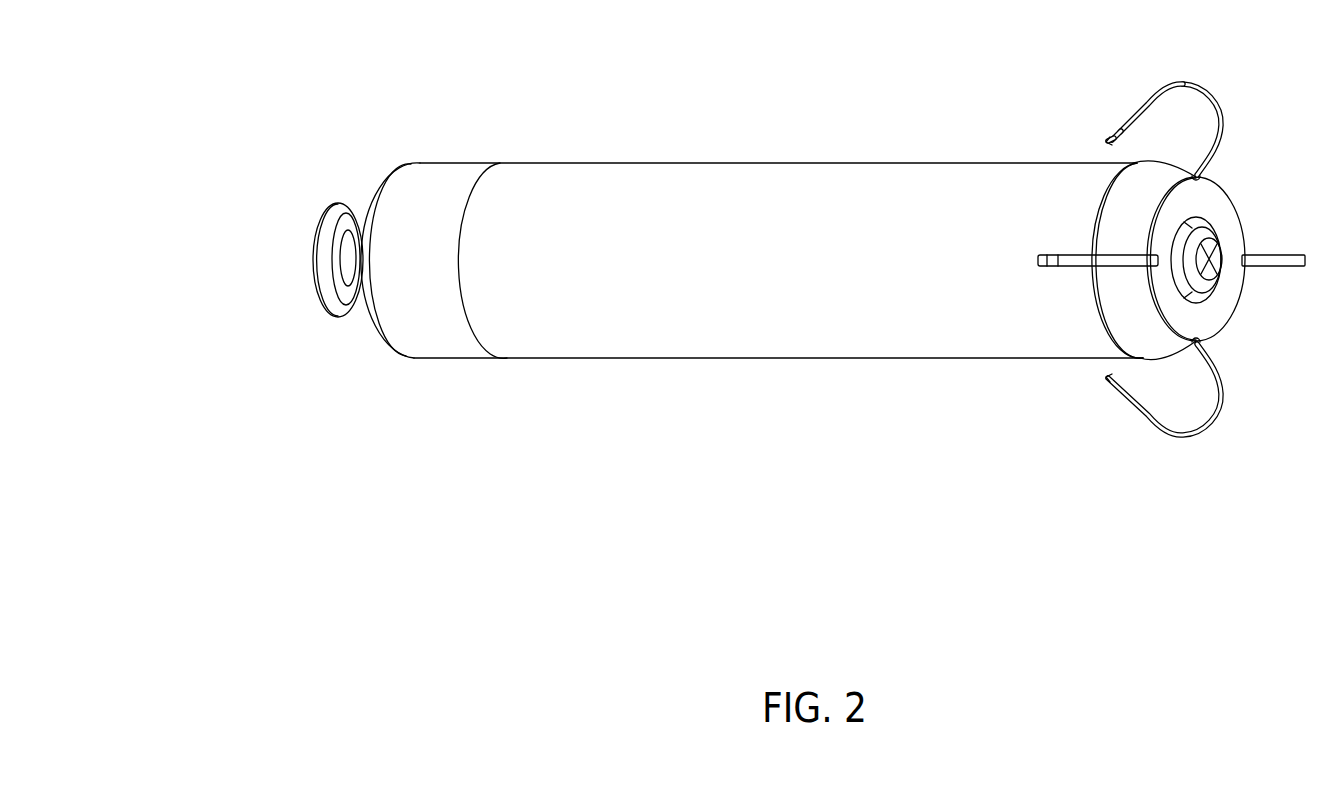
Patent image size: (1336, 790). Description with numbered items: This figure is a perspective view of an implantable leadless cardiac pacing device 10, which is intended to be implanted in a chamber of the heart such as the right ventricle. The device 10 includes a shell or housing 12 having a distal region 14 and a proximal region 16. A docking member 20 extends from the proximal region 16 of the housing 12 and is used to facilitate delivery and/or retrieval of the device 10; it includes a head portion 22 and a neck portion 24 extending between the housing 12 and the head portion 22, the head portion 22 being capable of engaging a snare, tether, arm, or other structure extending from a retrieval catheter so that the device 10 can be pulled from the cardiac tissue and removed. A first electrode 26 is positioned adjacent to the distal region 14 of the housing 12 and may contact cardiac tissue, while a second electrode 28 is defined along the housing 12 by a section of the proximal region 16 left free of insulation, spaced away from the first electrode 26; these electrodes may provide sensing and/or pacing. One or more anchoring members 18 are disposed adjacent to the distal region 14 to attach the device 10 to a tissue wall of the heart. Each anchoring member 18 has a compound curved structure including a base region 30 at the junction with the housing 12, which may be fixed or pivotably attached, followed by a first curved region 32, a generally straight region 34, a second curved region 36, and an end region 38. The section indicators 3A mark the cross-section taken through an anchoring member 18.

The implantable leadless cardiac pacing device 10 is at (632, 132).
The housing 12 is at (857, 163).
The distal region 14 is at (1082, 328).
The proximal region 16 is at (545, 330).
The anchoring member 18 is at (1200, 80).
The docking member 20 is at (314, 292).
The head portion 22 is at (342, 212).
The neck portion 24 is at (347, 265).
The first electrode 26 is at (1217, 277).
The second electrode 28 is at (438, 330).
The base region 30 is at (1199, 177).
The first curved region 32 is at (1223, 115).
The generally straight region 34 is at (1145, 110).
The second curved region 36 is at (1120, 138).
The end region 38 is at (1107, 143).
The section line 3A is at (1262, 428).